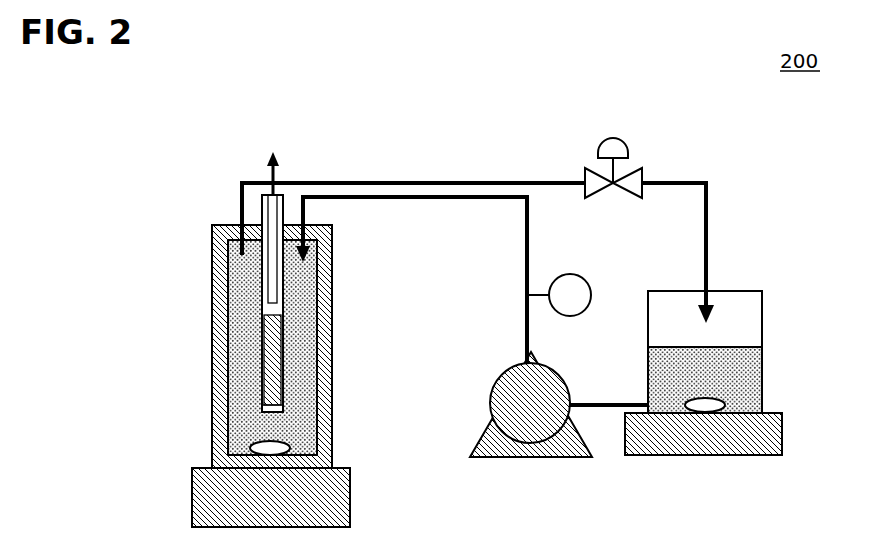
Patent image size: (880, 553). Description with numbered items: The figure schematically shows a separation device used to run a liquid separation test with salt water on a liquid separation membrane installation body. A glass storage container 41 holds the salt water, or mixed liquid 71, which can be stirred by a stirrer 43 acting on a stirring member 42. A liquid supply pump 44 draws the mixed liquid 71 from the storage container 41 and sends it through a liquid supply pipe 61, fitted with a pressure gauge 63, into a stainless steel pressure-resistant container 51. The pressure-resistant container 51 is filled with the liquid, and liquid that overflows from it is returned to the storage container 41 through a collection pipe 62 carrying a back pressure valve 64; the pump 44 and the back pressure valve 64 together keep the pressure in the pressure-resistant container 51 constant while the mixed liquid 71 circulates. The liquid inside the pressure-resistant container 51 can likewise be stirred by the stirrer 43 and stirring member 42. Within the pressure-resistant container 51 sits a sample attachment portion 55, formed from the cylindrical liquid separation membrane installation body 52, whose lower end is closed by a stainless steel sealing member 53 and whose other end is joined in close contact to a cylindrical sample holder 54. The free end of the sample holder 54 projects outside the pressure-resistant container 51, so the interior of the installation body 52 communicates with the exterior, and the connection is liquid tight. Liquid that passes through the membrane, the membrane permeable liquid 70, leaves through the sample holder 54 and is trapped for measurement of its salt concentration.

The storage container 41 is at (742, 291).
The stirring member 42 is at (290, 442).
The stirrer 43 is at (192, 498).
The liquid supply pump 44 is at (538, 458).
The pressure-resistant container 51 is at (212, 332).
The liquid separation membrane installation body 52 is at (283, 360).
The sealing member 53 is at (258, 408).
The sample holder 54 is at (237, 268).
The sample attachment portion 55 is at (255, 381).
The liquid supply pipe 61 is at (440, 197).
The collection pipe 62 is at (413, 183).
The pressure gauge 63 is at (573, 273).
The back pressure valve 64 is at (620, 138).
The membrane permeable liquid 70 is at (268, 170).
The mixed liquid 71 is at (303, 328).